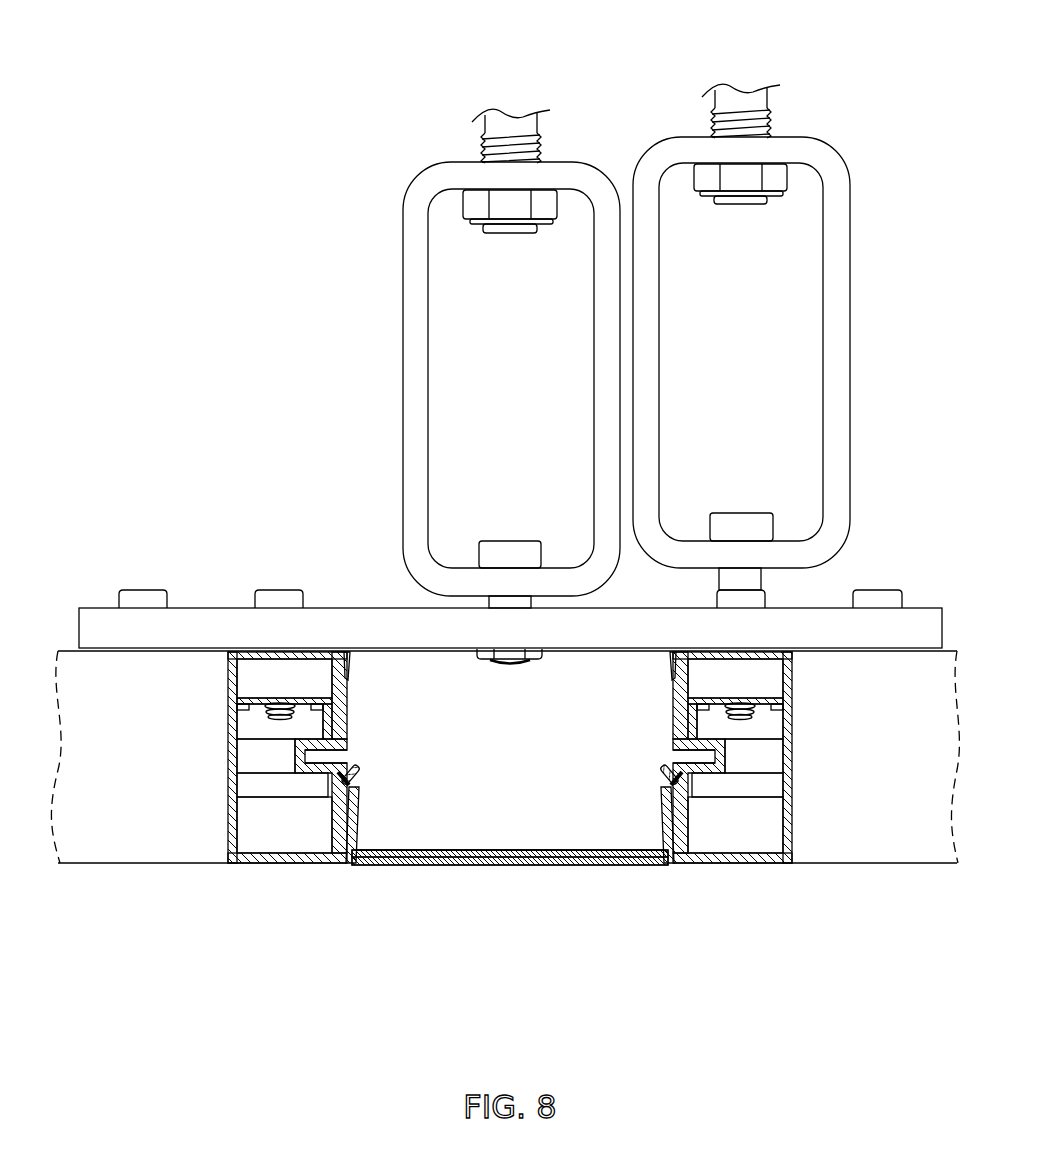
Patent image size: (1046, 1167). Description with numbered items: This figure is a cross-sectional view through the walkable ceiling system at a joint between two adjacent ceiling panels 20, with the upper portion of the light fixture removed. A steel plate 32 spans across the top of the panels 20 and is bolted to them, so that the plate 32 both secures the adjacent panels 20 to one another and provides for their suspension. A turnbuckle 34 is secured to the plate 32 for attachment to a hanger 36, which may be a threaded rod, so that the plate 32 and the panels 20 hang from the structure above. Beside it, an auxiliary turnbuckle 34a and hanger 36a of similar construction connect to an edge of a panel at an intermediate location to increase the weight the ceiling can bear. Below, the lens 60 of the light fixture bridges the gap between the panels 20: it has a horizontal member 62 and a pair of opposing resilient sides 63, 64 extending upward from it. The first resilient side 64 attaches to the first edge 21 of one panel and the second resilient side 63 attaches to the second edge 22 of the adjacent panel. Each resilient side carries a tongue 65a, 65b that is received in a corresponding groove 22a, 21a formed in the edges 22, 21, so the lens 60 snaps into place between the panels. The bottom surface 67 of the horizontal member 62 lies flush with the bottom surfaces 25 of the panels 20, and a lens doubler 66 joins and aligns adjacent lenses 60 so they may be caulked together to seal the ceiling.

The ceiling panel 20 is at (133, 838).
The first edge 21 is at (676, 823).
The groove 21a is at (677, 762).
The second edge 22 is at (332, 828).
The groove 22a is at (343, 762).
The bottom surface 25 is at (253, 867).
The steel plate 32 is at (97, 628).
The turnbuckle 34 is at (412, 346).
The turnbuckle 34a is at (835, 333).
The hanger 36 is at (537, 130).
The hanger 36a is at (768, 100).
The lens 60 is at (557, 867).
The horizontal member 62 is at (507, 867).
The second resilient side 63 is at (385, 820).
The first resilient side 64 is at (635, 820).
The tongue 65a is at (345, 783).
The tongue 65b is at (675, 783).
The lens doubler 66 is at (527, 850).
The bottom surface 67 is at (448, 867).